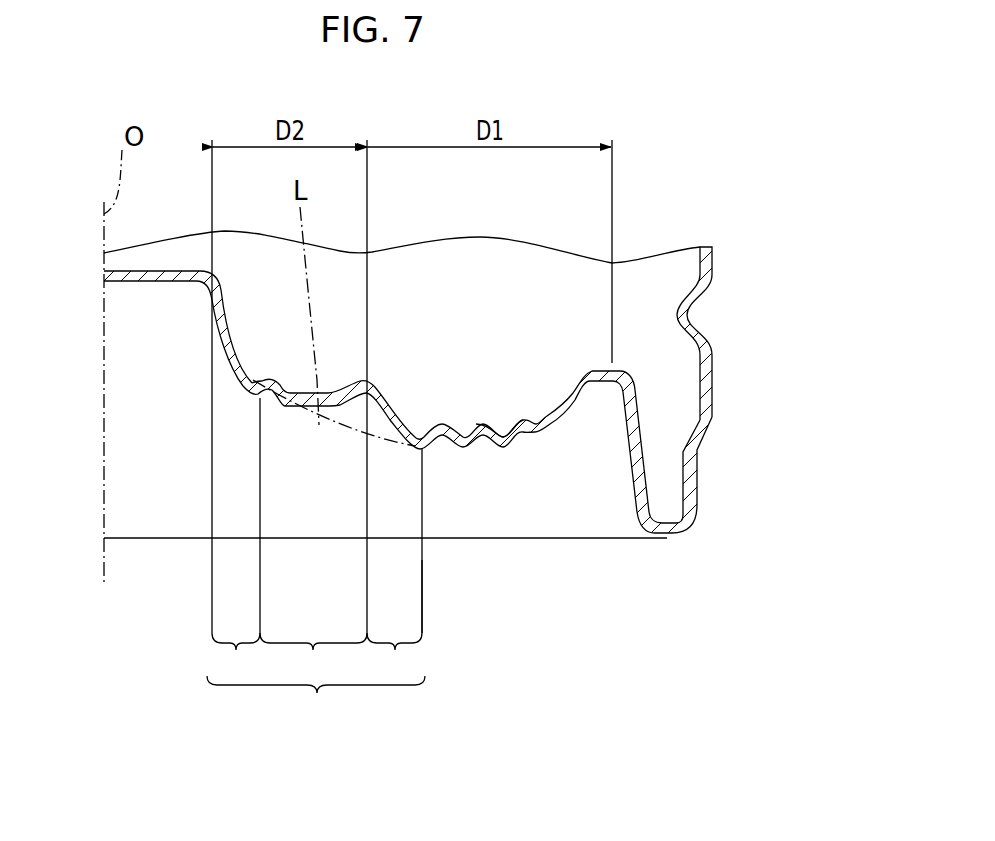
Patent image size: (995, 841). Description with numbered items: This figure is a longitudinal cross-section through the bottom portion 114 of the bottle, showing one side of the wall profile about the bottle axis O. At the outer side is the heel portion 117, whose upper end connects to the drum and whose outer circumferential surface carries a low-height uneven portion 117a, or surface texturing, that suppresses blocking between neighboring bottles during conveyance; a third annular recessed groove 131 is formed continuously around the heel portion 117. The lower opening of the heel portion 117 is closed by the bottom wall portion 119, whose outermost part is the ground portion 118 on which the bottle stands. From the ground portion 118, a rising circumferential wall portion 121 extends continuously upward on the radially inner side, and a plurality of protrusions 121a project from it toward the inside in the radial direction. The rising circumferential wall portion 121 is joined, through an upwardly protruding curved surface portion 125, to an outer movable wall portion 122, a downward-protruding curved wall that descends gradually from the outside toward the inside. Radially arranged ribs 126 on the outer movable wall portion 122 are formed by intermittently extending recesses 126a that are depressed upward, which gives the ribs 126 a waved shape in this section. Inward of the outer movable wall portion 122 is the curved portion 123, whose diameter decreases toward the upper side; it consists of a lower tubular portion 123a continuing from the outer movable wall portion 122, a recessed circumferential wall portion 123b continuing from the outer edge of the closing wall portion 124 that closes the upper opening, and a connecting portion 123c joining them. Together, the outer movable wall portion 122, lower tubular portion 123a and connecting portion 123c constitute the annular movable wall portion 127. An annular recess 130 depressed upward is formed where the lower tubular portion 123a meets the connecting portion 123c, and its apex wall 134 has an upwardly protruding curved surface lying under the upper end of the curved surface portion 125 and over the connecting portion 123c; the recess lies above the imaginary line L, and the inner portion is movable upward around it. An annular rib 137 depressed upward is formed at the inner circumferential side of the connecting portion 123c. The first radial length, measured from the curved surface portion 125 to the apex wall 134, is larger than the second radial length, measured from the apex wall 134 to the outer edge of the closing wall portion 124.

The bottom portion 114 is at (716, 245).
The heel portion 117 is at (716, 367).
The uneven portion 117a is at (693, 496).
The ground portion 118 is at (668, 543).
The bottom wall portion 119 is at (153, 544).
The rising circumferential wall portion 121 is at (630, 478).
The protrusions 121a is at (627, 449).
The outer movable wall portion 122 is at (450, 460).
The curved portion 123 is at (316, 703).
The lower tubular portion 123a is at (394, 566).
The recessed circumferential wall portion 123b is at (236, 541).
The connecting portion 123c is at (313, 658).
The closing wall portion 124 is at (150, 283).
The curved surface portion 125 is at (614, 385).
The ribs 126 is at (533, 440).
The recesses 126a is at (518, 434).
The movable wall portion 127 is at (443, 684).
The annular recess 130 is at (359, 402).
The third annular recessed groove 131 is at (688, 318).
The apex wall 134 is at (367, 380).
The annular rib 137 is at (272, 398).